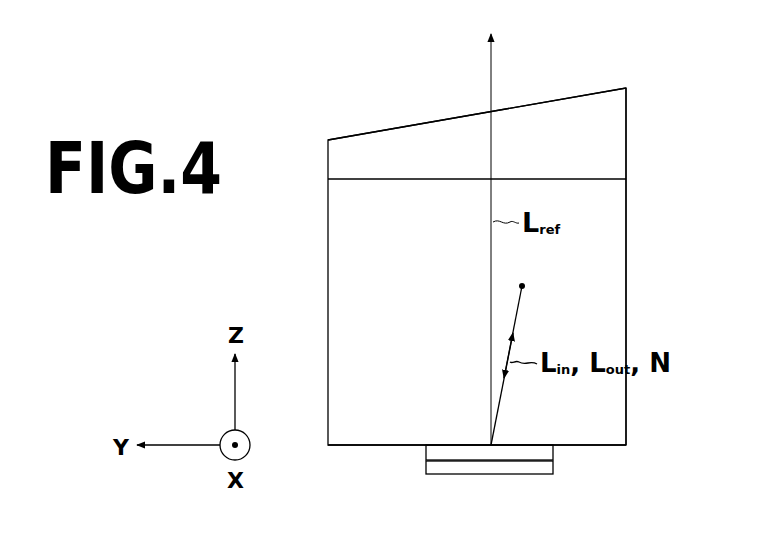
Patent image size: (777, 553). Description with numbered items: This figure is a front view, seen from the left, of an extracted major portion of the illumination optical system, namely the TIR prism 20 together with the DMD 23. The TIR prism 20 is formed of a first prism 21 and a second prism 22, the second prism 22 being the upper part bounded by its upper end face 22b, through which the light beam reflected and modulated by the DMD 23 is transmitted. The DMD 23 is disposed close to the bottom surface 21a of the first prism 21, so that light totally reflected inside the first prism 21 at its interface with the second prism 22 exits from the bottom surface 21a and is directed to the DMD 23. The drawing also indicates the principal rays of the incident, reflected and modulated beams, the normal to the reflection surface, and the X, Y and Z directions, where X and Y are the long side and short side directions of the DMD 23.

The TIR prism 20 is at (450, 73).
The first prism 21 is at (568, 97).
The bottom surface 21a is at (603, 447).
The second prism 22 is at (629, 300).
The upper end face 22b is at (587, 179).
The DMD 23 is at (530, 475).